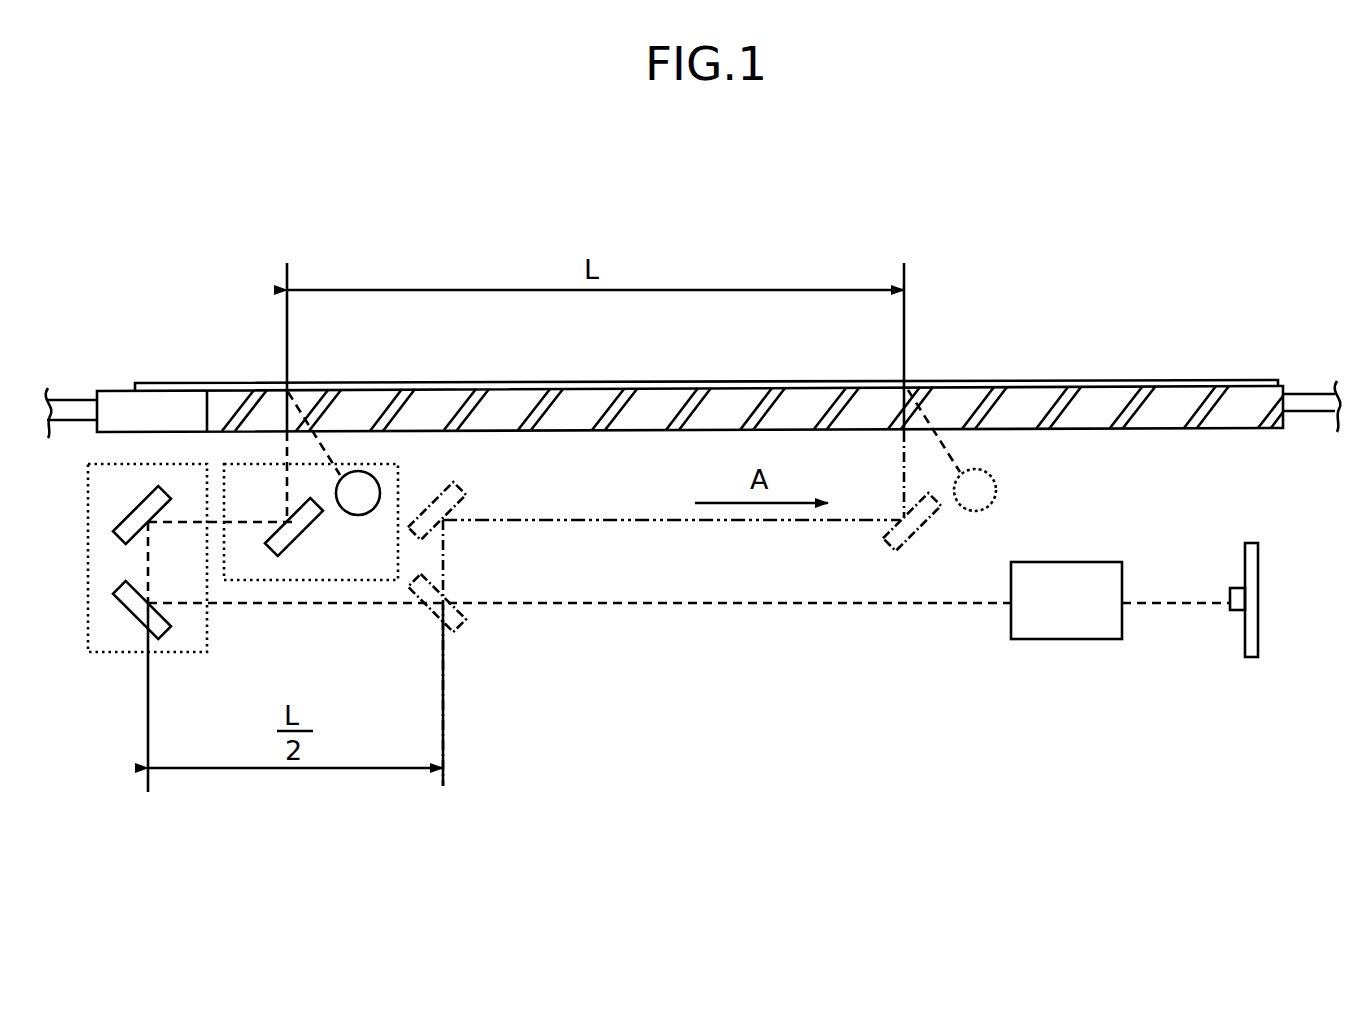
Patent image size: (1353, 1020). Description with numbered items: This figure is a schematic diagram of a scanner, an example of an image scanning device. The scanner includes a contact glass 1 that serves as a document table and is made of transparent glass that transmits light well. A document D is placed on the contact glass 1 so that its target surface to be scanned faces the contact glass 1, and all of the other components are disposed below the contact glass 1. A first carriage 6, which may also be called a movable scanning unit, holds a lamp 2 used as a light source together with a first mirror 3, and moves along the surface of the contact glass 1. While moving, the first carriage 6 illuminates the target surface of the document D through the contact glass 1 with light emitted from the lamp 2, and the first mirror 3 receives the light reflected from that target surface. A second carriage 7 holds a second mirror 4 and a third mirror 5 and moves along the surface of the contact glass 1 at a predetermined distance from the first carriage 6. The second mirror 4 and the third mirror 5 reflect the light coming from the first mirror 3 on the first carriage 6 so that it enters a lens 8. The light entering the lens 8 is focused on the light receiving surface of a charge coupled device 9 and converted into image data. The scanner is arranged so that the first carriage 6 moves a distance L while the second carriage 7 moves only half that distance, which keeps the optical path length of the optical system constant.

The contact glass 1 is at (1021, 395).
The lamp 2 is at (356, 515).
The first mirror 3 is at (278, 552).
The second mirror 4 is at (133, 508).
The third mirror 5 is at (130, 614).
The first carriage 6 is at (398, 473).
The second carriage 7 is at (96, 655).
The lens 8 is at (1048, 640).
The charge coupled device (CCD) 9 is at (1251, 658).
The document D is at (1148, 381).